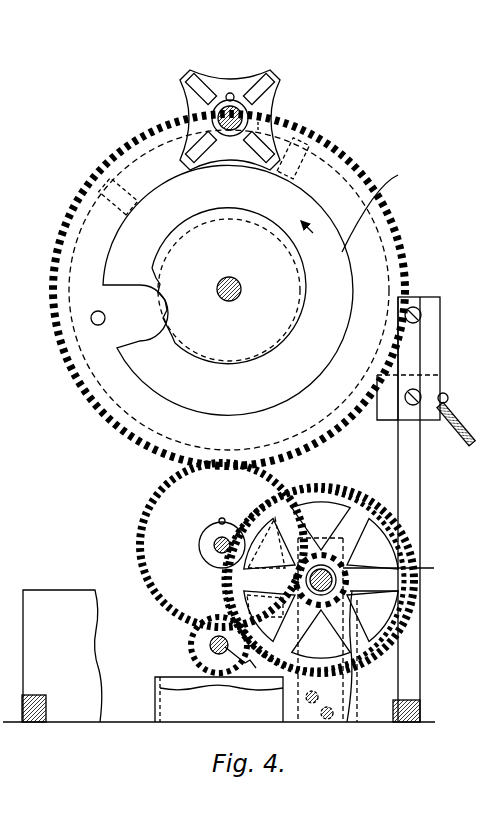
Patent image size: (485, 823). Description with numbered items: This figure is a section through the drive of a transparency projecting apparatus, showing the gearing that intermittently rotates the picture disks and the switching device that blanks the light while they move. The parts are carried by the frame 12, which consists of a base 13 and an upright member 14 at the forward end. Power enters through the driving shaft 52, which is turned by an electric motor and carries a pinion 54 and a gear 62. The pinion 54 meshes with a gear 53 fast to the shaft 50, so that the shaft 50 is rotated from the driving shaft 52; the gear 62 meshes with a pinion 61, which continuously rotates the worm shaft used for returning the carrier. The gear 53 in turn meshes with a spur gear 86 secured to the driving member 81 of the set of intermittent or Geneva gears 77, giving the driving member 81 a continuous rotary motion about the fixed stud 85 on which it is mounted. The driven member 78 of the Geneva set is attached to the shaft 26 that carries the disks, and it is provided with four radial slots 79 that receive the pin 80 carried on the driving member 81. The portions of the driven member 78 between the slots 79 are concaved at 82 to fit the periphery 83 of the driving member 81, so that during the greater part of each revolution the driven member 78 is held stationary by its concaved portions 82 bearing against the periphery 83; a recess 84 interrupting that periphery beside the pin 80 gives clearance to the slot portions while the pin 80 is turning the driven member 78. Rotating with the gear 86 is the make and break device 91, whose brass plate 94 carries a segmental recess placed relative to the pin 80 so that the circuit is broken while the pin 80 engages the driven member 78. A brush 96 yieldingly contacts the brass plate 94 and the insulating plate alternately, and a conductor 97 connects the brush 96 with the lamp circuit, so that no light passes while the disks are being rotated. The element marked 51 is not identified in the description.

The frame 12 is at (420, 510).
The base 13 is at (42, 724).
The upright member 14 is at (200, 712).
The shaft 26 is at (213, 118).
The shaft 50 is at (215, 548).
The pawl 51 is at (262, 652).
The driving shaft 52 is at (399, 562).
The gear 53 is at (265, 495).
The pinion 54 is at (340, 572).
The pinion 61 is at (200, 650).
The gear 62 is at (368, 503).
The intermittent gears 77 is at (191, 150).
The driven member 78 is at (278, 102).
The radial slots 79 is at (272, 85).
The pin 80 is at (91, 320).
The driving member 81 is at (379, 204).
The concaved portions 82 is at (240, 72).
The periphery 83 is at (324, 222).
The recess 84 is at (130, 294).
The fixed stud 85 is at (231, 280).
The spur gear 86 is at (395, 234).
The make and break device 91 is at (88, 194).
The brass plate 94 is at (123, 178).
The brush 96 is at (380, 410).
The conductor 97 is at (462, 452).